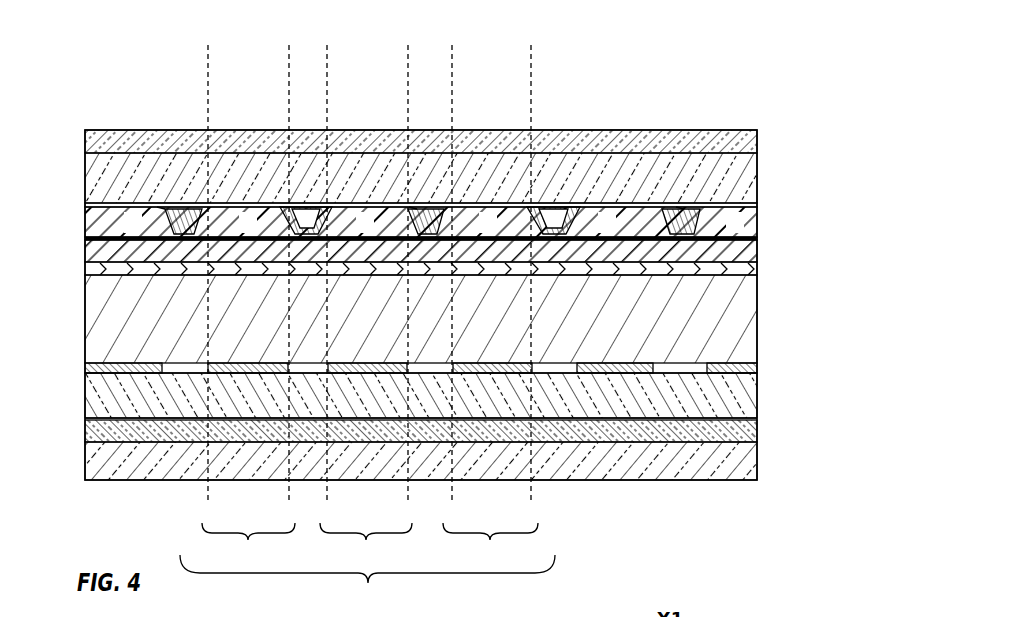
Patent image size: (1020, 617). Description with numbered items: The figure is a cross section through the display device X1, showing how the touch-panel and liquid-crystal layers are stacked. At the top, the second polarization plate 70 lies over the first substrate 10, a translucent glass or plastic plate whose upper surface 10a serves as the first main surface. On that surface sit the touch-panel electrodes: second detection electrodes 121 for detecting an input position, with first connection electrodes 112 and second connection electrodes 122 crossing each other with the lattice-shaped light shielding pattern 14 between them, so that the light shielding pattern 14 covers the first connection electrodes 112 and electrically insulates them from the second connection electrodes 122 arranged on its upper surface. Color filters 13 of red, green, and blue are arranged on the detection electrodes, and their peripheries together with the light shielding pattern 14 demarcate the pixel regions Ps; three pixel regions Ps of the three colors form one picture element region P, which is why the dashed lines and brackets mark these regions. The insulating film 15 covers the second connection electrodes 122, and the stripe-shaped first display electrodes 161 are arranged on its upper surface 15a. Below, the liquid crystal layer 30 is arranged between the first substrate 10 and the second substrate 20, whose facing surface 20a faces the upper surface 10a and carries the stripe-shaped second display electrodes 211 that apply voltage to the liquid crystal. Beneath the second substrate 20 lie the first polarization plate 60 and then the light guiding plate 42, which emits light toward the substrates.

The first substrate 10 is at (338, 158).
The upper surface 10a is at (218, 213).
The color filter 13 is at (113, 213).
The light shielding pattern 14 is at (198, 210).
The insulating film 15 is at (508, 215).
The upper surface 15a is at (467, 275).
The second substrate 20 is at (119, 394).
The facing surface 20a is at (198, 370).
The liquid crystal layer 30 is at (678, 317).
The light guiding plate 42 is at (697, 460).
The first polarization plate 60 is at (742, 437).
The second polarization plate 70 is at (128, 135).
The first connection electrode 112 is at (310, 205).
The second detection electrode 121 is at (157, 210).
The second connection electrode 122 is at (288, 215).
The first display electrode 161 is at (640, 285).
The second display electrode 211 is at (620, 367).
The display device X1 is at (652, 44).
The picture element region P is at (367, 585).
The pixel region Ps is at (370, 547).